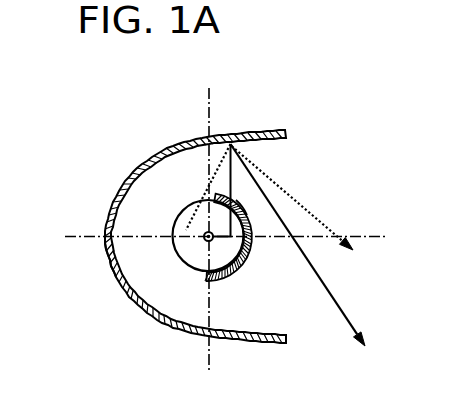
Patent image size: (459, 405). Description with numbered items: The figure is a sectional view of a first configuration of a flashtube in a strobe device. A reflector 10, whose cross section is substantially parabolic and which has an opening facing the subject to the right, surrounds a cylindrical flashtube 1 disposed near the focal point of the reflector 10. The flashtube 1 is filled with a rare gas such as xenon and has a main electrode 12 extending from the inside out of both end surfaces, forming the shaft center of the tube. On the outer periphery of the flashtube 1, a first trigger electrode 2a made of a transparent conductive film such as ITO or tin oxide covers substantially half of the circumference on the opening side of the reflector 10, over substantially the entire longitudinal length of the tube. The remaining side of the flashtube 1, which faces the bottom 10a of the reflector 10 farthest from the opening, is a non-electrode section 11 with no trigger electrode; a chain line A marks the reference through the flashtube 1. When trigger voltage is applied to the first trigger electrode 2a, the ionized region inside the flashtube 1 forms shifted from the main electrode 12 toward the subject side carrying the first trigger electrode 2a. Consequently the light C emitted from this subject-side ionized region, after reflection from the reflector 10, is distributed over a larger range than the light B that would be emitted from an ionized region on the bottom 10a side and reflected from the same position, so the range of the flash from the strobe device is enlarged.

The flashtube 1 is at (177, 236).
The first trigger electrode 2a is at (241, 208).
The reflector 10 is at (181, 142).
The bottom 10a is at (109, 262).
The non-electrode section 11 is at (192, 268).
The main electrode 12 is at (210, 239).
The chain line A is at (209, 92).
The light B is at (323, 223).
The light C is at (344, 308).